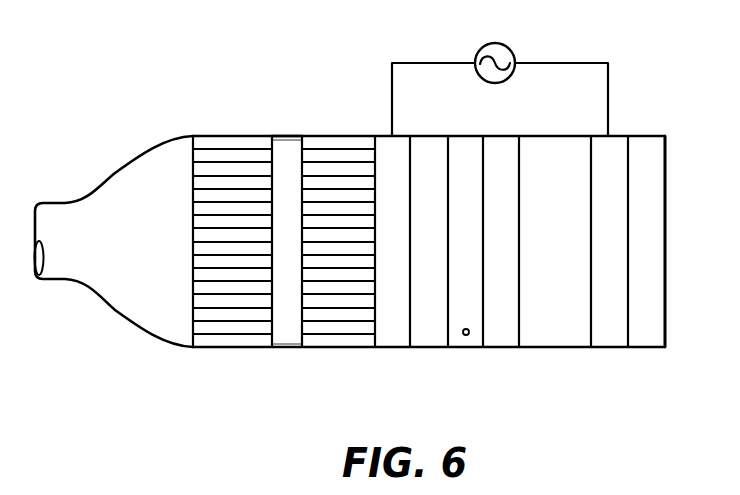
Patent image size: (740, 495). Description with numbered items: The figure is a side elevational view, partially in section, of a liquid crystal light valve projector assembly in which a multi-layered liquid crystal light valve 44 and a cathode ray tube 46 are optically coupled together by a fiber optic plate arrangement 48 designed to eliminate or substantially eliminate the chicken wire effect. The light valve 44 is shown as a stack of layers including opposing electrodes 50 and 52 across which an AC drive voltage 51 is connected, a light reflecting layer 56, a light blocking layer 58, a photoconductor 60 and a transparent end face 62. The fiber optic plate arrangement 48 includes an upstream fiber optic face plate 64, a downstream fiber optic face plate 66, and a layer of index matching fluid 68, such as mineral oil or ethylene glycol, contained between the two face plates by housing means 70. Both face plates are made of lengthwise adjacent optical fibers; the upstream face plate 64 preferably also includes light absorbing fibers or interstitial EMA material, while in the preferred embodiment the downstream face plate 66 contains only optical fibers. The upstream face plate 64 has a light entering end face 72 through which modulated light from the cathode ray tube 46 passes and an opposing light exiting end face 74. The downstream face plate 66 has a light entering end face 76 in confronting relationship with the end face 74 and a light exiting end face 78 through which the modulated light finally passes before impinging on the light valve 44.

The liquid crystal light valve 44 is at (478, 348).
The cathode ray tube 46 is at (90, 297).
The fiber optic plate arrangement 48 is at (276, 134).
The electrode 50 is at (393, 335).
The AC drive voltage 51 is at (500, 43).
The electrode 52 is at (613, 145).
The light reflecting layer 56 is at (500, 337).
The light blocking layer 58 is at (468, 145).
The photoconductor 60 is at (420, 145).
The transparent end face 62 is at (652, 170).
The upstream fiber optic face plate 64 is at (232, 335).
The downstream fiber optic face plate 66 is at (342, 135).
The index matching fluid 68 is at (288, 333).
The housing means 70 is at (287, 135).
The light entering end face 72 is at (193, 203).
The light exiting end face 74 is at (272, 312).
The light entering end face 76 is at (303, 328).
The light exiting end face 78 is at (375, 160).